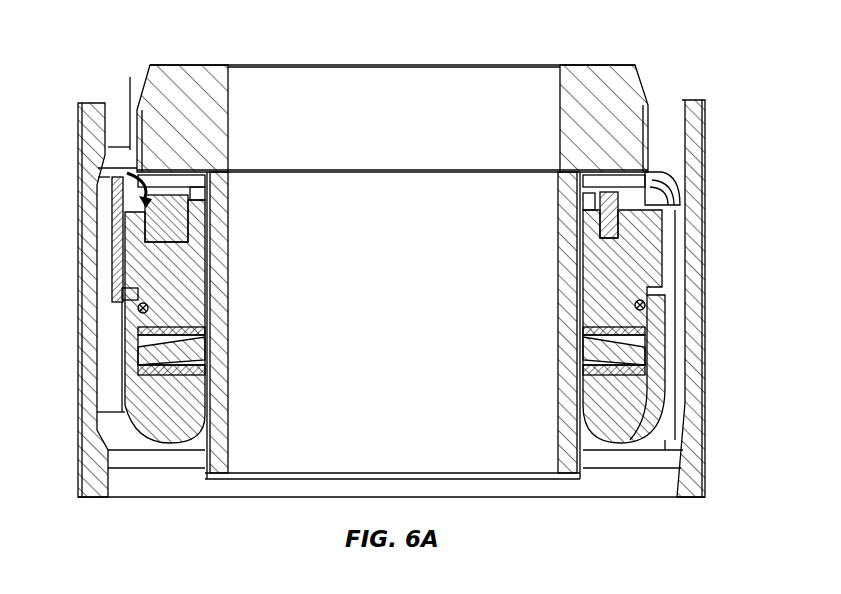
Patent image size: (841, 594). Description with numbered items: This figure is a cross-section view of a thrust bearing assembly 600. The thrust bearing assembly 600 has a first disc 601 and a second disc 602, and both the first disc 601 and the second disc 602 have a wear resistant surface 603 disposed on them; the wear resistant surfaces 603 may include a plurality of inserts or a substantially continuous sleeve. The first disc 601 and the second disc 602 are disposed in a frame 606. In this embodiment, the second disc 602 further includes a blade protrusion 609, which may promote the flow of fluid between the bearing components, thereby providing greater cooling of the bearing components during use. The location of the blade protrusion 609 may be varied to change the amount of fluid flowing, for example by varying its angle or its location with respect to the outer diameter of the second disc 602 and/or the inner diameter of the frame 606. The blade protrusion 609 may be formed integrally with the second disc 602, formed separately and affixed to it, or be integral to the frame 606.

The thrust bearing assembly 600 is at (572, 36).
The first disc 601 is at (618, 120).
The second disc 602 is at (650, 260).
The wear resistant surface 603 is at (637, 180).
The frame 606 is at (90, 223).
The blade protrusion 609 is at (113, 203).